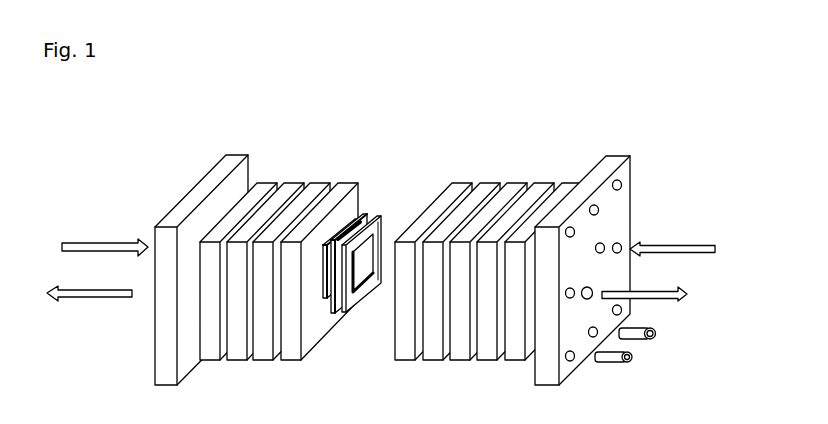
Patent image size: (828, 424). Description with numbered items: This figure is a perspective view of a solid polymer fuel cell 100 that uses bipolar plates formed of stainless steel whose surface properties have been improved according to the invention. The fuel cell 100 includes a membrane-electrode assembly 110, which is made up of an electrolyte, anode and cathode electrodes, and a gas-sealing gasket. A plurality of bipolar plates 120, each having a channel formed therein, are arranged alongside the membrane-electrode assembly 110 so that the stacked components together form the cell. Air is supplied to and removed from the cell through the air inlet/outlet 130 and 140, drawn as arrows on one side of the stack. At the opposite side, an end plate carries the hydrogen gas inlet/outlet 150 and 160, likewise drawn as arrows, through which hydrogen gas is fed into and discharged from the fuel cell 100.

The solid polymer fuel cell 100 is at (435, 249).
The membrane-electrode assembly 110 is at (372, 212).
The bipolar plates 120 is at (265, 363).
The air inlet/outlet 130 is at (93, 298).
The air inlet/outlet 140 is at (100, 243).
The hydrogen gas inlet/outlet 150 is at (677, 244).
The hydrogen gas inlet/outlet 160 is at (658, 297).